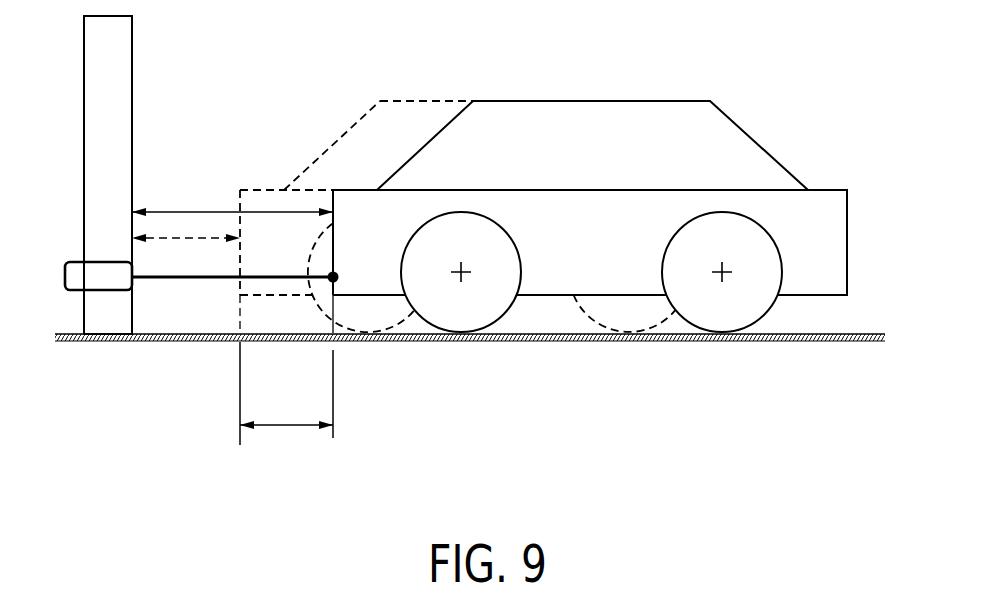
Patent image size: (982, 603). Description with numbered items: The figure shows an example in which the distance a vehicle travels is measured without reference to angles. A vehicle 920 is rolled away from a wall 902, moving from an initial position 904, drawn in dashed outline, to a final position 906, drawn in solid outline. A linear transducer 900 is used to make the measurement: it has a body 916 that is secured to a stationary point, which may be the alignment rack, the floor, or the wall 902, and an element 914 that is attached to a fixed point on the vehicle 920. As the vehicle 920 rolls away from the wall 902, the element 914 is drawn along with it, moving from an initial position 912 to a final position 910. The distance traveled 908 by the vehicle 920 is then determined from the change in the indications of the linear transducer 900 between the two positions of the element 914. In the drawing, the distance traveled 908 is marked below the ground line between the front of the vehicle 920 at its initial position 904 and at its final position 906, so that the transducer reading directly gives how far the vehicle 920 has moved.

The linear transducer 900 is at (78, 260).
The wall 902 is at (138, 60).
The initial position 904 is at (413, 118).
The final position 906 is at (515, 125).
The distance traveled 908 is at (284, 410).
The initial position 910 is at (182, 208).
The final position 912 is at (220, 235).
The element 914 is at (337, 300).
The body 916 is at (118, 284).
The vehicle 920 is at (645, 98).